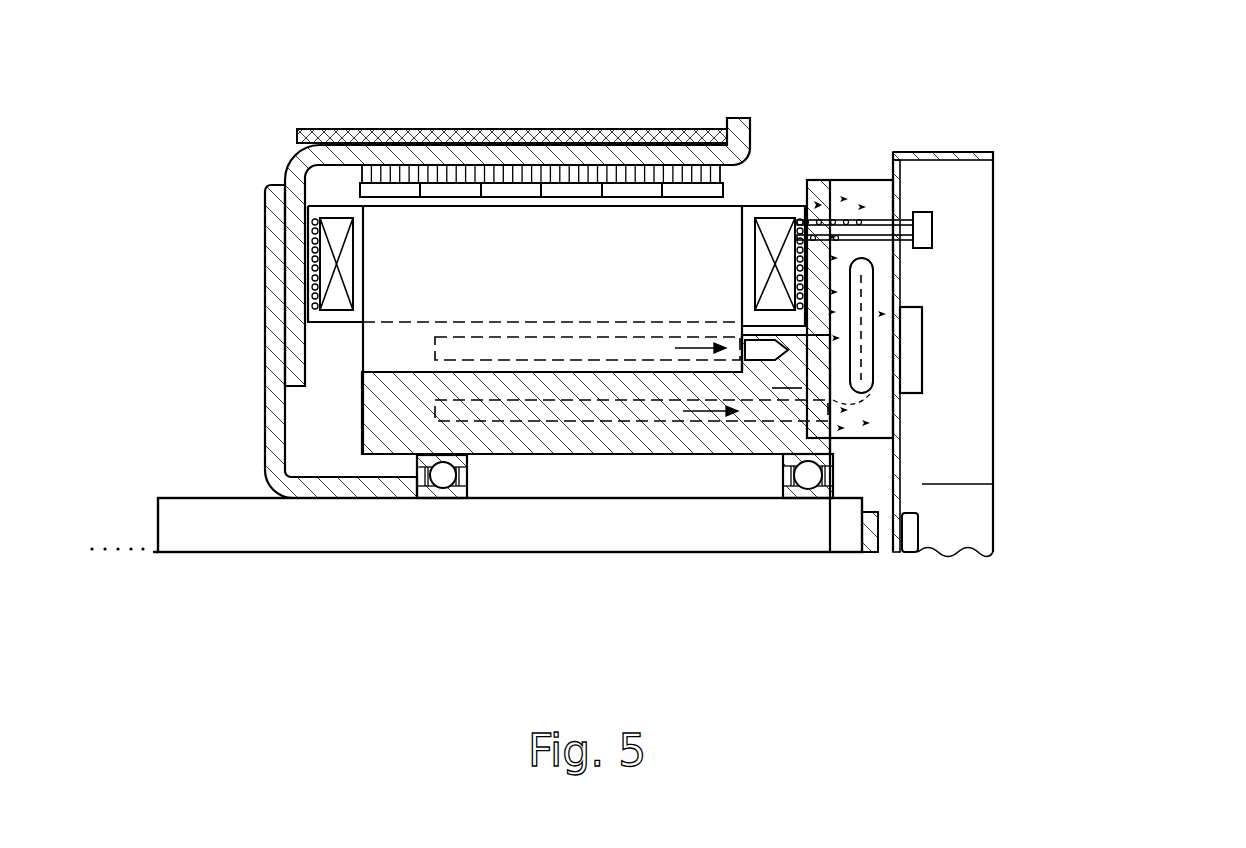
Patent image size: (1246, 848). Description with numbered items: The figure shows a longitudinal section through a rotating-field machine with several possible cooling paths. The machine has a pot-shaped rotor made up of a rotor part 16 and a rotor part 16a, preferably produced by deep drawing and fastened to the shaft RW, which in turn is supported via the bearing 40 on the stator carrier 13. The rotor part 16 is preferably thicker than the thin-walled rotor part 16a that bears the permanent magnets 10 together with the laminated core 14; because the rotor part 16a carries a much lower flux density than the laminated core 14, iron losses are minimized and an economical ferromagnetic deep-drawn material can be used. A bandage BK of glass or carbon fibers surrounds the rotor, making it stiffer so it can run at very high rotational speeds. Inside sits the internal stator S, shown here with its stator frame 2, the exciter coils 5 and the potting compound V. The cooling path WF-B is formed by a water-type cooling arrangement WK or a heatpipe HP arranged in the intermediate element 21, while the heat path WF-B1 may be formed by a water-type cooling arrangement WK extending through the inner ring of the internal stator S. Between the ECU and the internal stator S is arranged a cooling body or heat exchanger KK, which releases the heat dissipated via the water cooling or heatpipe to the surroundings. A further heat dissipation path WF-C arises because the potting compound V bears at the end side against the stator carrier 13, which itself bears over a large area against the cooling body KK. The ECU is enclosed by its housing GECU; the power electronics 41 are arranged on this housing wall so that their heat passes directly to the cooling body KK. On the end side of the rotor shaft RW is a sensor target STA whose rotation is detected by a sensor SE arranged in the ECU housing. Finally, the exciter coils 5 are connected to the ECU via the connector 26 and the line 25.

The shaft RW is at (238, 533).
The rotor part 16 is at (268, 305).
The rotor 16a is at (297, 175).
The bandage BK is at (367, 135).
The permanent magnets 10 is at (437, 192).
The laminated core 14 is at (503, 172).
The internal stator S is at (620, 243).
The stator carrier 2 is at (323, 317).
The exciter coils 5 is at (332, 257).
The potting compound V is at (315, 277).
The intermediate element 21 is at (423, 348).
The stator carrier 13 is at (557, 620).
The heatpipe HP is at (508, 355).
The cooling path WF-B is at (653, 349).
The heat path WF-B1 is at (631, 412).
The bearing 40 is at (435, 498).
The water-type cooling arrangement WK is at (897, 285).
The heat dissipation path WF-C is at (832, 295).
The line 25 is at (857, 222).
The connector 26 is at (932, 222).
The ECU housing GECU is at (958, 152).
The element ECU is at (957, 471).
The power electronics 41 is at (914, 332).
The cooling body KK is at (900, 412).
The sensor target STA is at (870, 552).
The sensor SE is at (913, 540).